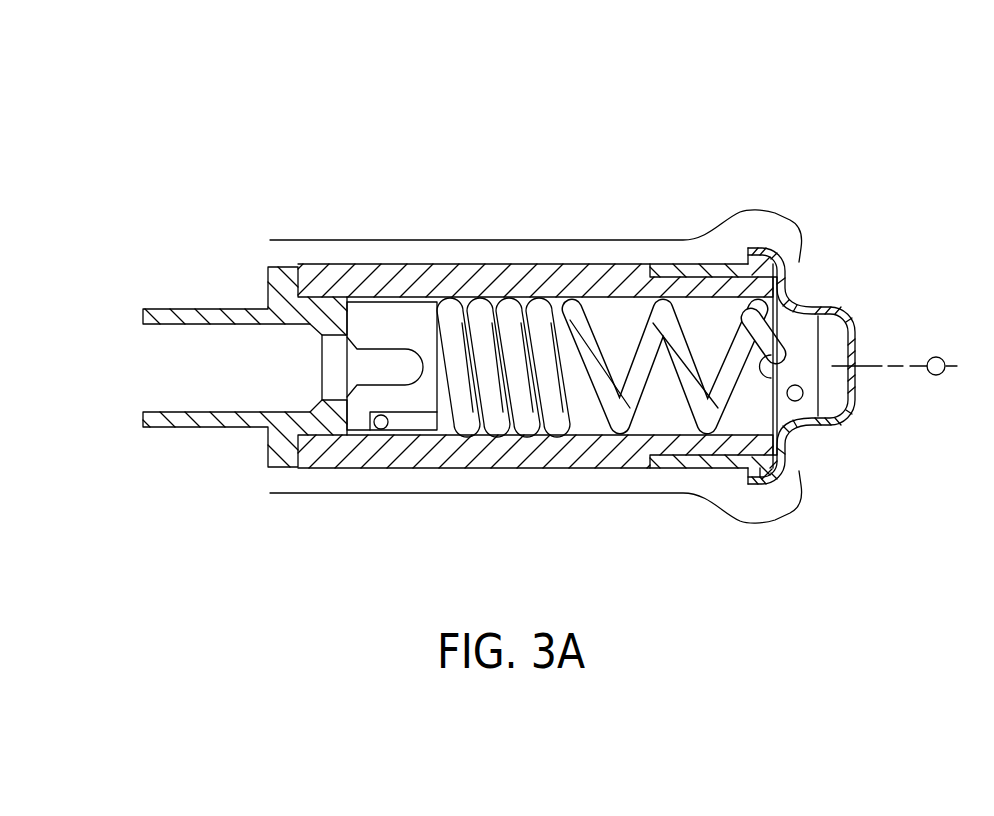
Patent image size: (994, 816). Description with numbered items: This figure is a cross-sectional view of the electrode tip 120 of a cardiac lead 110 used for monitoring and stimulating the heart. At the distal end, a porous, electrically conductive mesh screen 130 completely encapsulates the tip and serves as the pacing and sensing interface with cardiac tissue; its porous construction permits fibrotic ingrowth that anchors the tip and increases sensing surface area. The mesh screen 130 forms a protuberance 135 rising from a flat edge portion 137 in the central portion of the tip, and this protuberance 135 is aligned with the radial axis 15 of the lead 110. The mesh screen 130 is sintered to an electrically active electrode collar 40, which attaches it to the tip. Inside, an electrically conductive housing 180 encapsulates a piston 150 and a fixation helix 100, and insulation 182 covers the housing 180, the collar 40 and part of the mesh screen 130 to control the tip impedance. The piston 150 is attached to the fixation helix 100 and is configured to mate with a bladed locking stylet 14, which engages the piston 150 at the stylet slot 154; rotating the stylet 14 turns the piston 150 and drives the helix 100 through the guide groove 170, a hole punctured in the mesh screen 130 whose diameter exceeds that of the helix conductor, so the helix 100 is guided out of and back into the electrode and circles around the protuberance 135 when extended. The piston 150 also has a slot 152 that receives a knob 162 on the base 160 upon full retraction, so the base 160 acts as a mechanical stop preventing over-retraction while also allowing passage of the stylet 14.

The lead 110 is at (336, 78).
The electrode tip 120 is at (797, 183).
The insulation 182 is at (328, 247).
The electrically conductive housing 180 is at (613, 467).
The base 160 is at (277, 302).
The knob 162 is at (351, 428).
The piston 150 is at (387, 315).
The stylet slot 154 is at (406, 350).
The slot 152 is at (390, 422).
The fixation helix 100 is at (530, 428).
The bladed locking stylet 14 is at (559, 330).
The guide groove 170 is at (798, 402).
The mesh screen 130 is at (797, 259).
The protuberance 135 is at (845, 307).
The flat edge portion 137 is at (788, 476).
The electrode collar 40 is at (747, 478).
The radial axis 15 is at (934, 375).